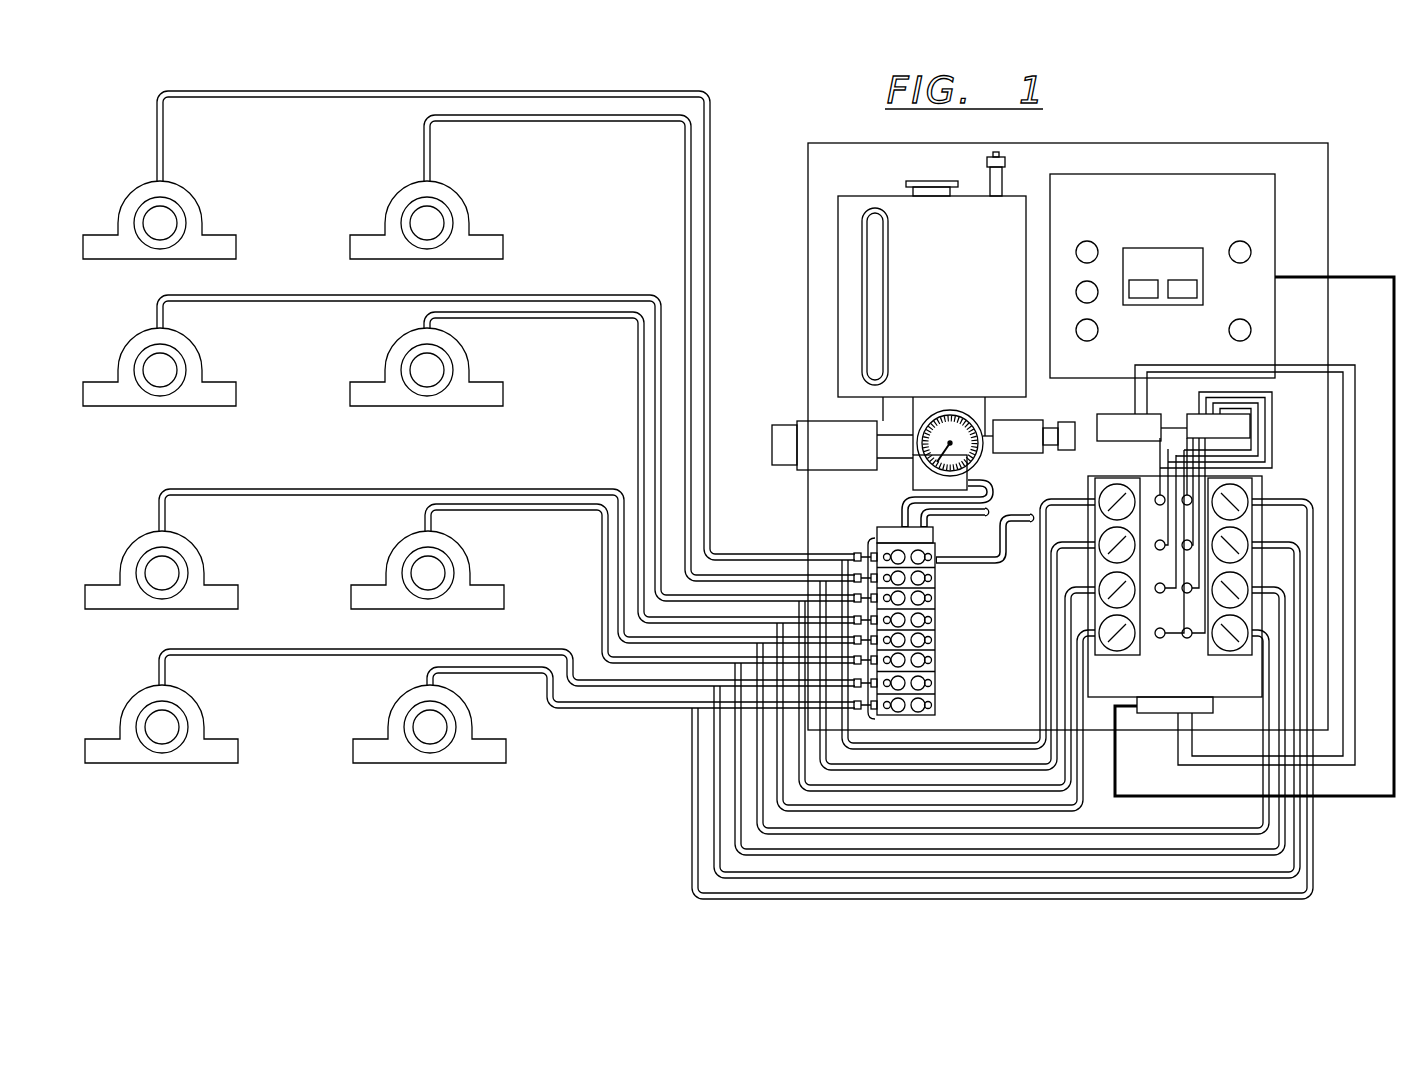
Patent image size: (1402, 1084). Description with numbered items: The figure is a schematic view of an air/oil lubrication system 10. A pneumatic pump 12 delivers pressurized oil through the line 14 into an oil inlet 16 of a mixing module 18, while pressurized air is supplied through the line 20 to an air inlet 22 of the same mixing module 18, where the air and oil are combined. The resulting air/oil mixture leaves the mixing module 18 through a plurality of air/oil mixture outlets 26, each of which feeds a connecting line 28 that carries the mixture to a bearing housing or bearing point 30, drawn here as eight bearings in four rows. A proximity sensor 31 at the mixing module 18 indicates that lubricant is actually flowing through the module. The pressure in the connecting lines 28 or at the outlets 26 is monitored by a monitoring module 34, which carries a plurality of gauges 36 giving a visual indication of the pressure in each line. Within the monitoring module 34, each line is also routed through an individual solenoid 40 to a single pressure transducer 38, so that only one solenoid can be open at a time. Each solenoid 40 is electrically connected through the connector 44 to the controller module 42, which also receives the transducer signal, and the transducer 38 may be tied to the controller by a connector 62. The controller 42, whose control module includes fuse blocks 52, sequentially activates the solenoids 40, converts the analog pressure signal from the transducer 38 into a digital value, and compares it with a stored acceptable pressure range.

The air/oil lubrication system 10 is at (1286, 128).
The pneumatic pump 12 is at (867, 184).
The line 14 is at (988, 505).
The oil inlet 16 is at (870, 540).
The mixing module 18 is at (951, 629).
The line 20 is at (943, 516).
The air inlet 22 is at (886, 527).
The air/oil mixture outlets 26 is at (871, 623).
The connecting lines 28 is at (645, 433).
The bearing housing or bearing point 30 is at (186, 183).
The proximity sensor 31 is at (964, 563).
The monitoring module 34 is at (1270, 480).
The gauges 36 is at (1130, 488).
The pressure transducer 38 is at (1162, 714).
The solenoids 40 is at (1185, 505).
The controller module 42 is at (1147, 162).
The connector 44 is at (1186, 421).
The fuse blocks 52 is at (915, 786).
The connector 62 is at (1123, 413).